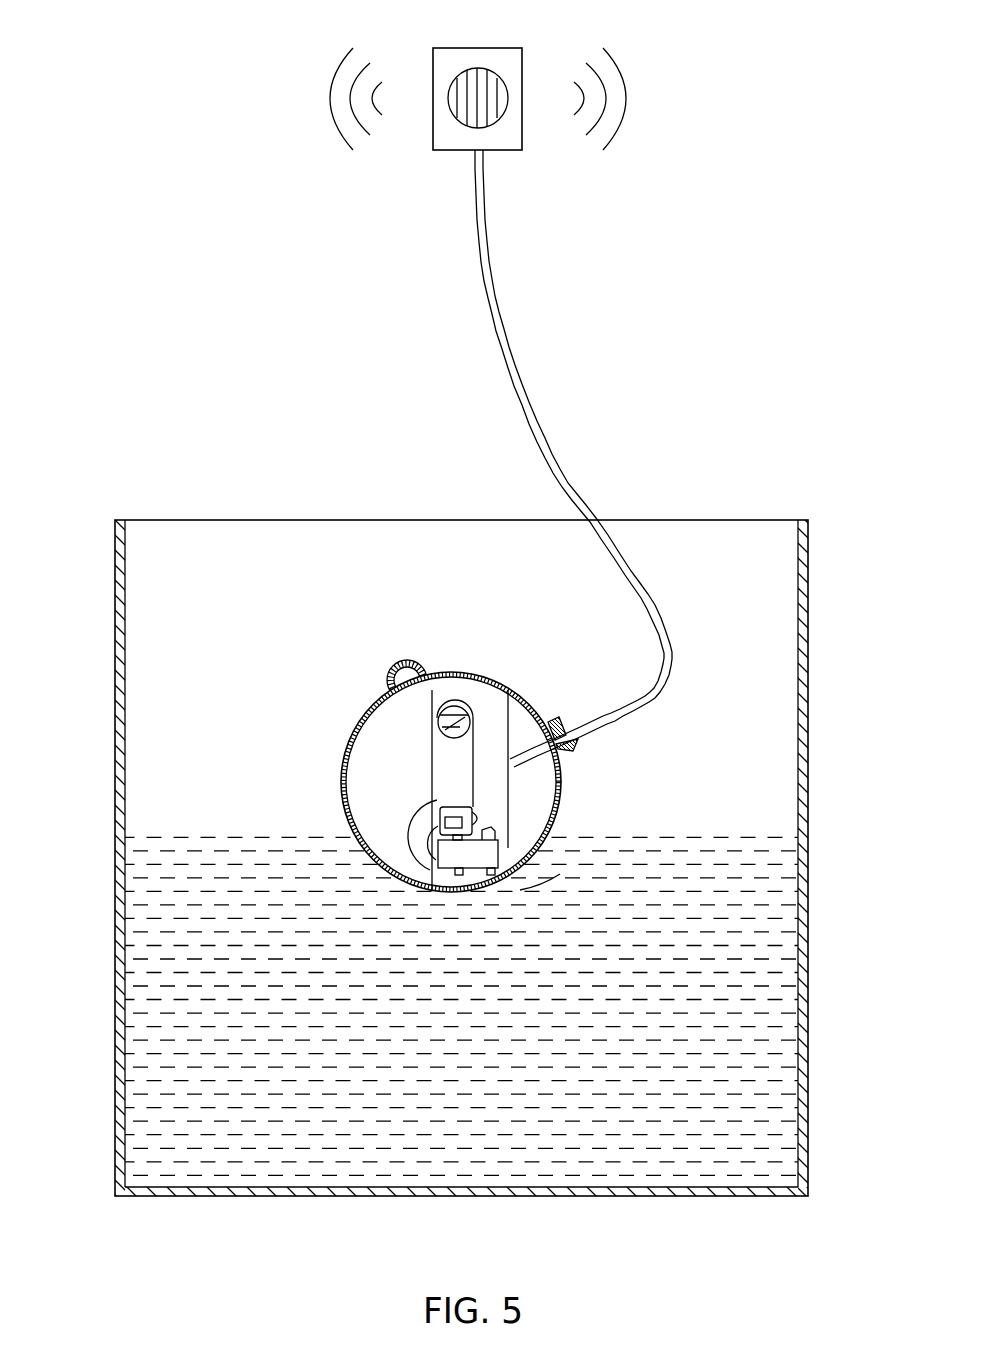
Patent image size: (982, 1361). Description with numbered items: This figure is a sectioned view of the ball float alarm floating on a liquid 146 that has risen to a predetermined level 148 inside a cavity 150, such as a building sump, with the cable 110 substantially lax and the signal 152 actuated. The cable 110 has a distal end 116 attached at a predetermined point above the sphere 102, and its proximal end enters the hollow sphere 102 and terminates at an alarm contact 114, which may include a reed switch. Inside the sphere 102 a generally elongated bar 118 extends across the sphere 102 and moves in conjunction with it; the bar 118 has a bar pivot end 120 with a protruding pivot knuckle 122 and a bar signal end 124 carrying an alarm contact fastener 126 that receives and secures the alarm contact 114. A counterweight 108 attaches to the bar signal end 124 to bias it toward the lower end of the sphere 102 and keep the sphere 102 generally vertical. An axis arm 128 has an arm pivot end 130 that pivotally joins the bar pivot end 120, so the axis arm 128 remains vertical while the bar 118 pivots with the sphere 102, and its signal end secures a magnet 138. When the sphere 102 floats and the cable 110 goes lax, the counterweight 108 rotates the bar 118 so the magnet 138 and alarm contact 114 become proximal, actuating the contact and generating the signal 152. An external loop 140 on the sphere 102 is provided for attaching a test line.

The sphere 102 is at (338, 742).
The counterweight 108 is at (445, 822).
The cable 110 is at (497, 312).
The alarm contact 114 is at (487, 857).
The distal end 116 is at (483, 165).
The bar 118 is at (509, 800).
The bar pivot end 120 is at (383, 709).
The pivot knuckle 122 is at (468, 707).
The bar signal end 124 is at (435, 877).
The alarm contact fastener 126 is at (495, 897).
The axis arm 128 is at (432, 778).
The arm pivot end 130 is at (454, 706).
The magnet 138 is at (408, 838).
The external loop 140 is at (392, 668).
The liquid 146 is at (150, 1008).
The predetermined level 148 is at (757, 840).
The cavity 150 is at (115, 578).
The signal 152 is at (523, 85).